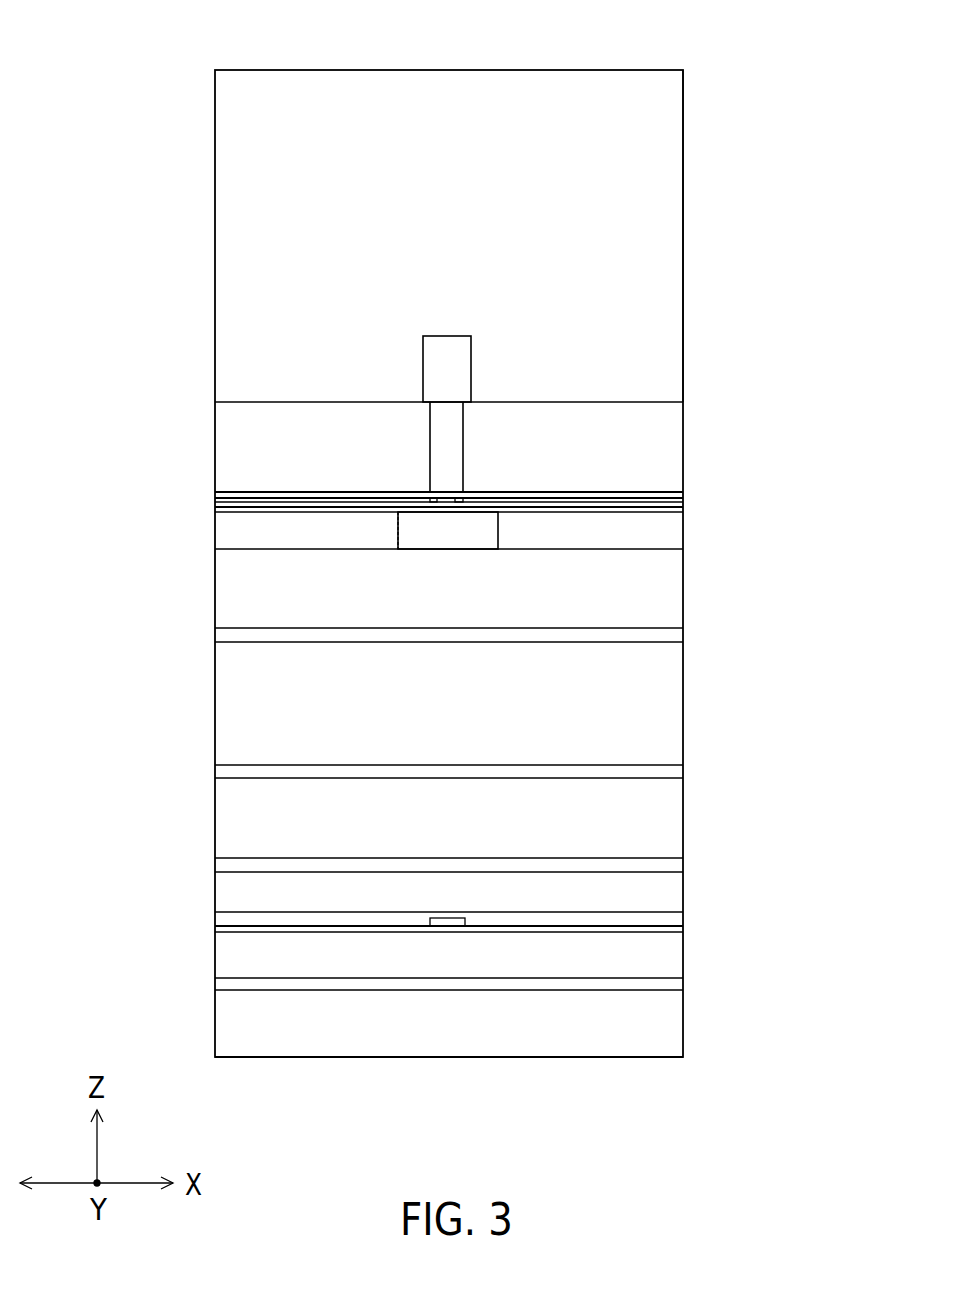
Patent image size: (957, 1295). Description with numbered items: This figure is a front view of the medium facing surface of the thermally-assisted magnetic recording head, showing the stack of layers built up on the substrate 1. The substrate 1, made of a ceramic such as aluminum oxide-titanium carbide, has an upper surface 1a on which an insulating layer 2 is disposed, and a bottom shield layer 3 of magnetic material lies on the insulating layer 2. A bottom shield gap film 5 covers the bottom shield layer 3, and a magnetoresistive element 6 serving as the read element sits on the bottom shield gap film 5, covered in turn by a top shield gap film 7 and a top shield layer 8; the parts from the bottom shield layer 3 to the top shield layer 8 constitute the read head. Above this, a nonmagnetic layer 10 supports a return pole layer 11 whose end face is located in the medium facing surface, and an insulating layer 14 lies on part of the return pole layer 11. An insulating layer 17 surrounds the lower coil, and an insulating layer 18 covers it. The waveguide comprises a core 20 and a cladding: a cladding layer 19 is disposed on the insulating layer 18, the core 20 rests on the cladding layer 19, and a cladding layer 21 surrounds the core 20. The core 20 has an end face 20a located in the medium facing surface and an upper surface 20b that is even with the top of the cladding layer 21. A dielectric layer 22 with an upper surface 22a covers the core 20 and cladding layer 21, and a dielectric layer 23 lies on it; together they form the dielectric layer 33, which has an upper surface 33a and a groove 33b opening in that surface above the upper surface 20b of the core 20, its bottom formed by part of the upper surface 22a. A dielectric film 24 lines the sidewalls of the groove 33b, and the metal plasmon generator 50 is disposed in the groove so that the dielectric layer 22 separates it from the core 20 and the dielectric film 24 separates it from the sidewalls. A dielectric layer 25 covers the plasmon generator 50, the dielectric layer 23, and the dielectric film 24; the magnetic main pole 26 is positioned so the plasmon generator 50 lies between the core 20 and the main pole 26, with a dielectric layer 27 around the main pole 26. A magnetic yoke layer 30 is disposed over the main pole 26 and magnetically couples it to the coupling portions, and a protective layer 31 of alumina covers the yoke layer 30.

The substrate 1 is at (683, 1025).
The upper surface 1a is at (247, 992).
The insulating layer 2 is at (683, 983).
The bottom shield layer 3 is at (683, 962).
The bottom shield gap film 5 is at (683, 930).
The magnetoresistive (MR) element 6 is at (445, 926).
The top shield gap film 7 is at (683, 915).
The top shield layer 8 is at (683, 896).
The nonmagnetic layer 10 is at (683, 865).
The return pole layer 11 is at (683, 815).
The insulating layer 14 is at (683, 770).
The insulating layer 17 is at (683, 718).
The insulating layer 18 is at (683, 636).
The cladding layer 19 is at (683, 614).
The core 20 is at (498, 533).
The end face 20a is at (435, 549).
The upper surface 20b is at (408, 502).
The cladding layer 21 is at (683, 533).
The dielectric layer 22 is at (683, 507).
The upper surface 22a is at (253, 507).
The dielectric layer 23 is at (683, 500).
The dielectric film 24 is at (400, 549).
The dielectric layer 25 is at (683, 495).
The main pole 26 is at (430, 452).
The dielectric layer 27 is at (683, 420).
The yoke layer 30 is at (423, 371).
The protective layer 31 is at (683, 143).
The dielectric layer 33 is at (771, 475).
The upper surface 33a is at (650, 492).
The groove 33b is at (450, 498).
The plasmon generator 50 is at (450, 498).